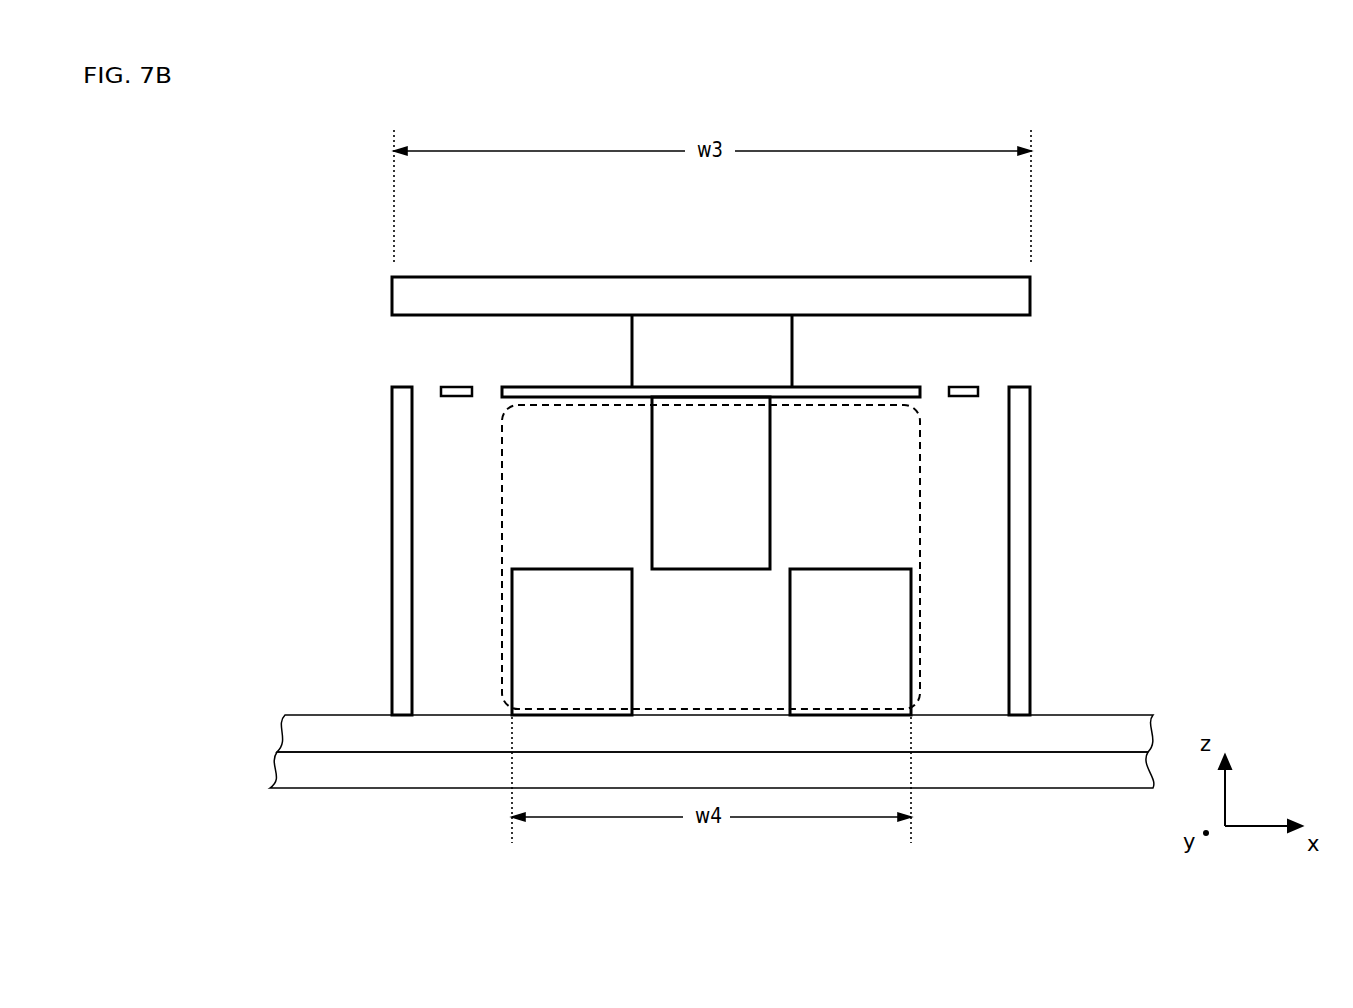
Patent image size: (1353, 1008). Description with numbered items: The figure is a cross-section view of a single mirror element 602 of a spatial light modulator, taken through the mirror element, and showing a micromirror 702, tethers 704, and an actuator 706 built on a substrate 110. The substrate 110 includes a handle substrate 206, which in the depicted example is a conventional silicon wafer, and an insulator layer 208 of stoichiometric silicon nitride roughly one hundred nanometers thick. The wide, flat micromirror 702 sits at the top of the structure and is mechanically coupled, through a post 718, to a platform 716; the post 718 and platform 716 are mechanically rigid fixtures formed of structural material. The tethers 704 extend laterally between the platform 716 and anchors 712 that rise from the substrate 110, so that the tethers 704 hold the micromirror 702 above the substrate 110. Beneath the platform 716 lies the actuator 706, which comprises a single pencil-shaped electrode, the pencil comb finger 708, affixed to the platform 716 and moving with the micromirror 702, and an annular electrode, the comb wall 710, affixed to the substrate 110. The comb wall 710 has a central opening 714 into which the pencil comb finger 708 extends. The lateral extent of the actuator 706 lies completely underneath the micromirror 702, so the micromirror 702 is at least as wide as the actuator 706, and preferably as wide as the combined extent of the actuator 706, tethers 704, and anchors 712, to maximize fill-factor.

The mirror element 602 is at (199, 237).
The micromirror 702 is at (392, 295).
The post 718 is at (672, 350).
The platform 716 is at (850, 390).
The tethers 704 is at (966, 388).
The anchors 712 is at (392, 532).
The actuator 706 is at (920, 560).
The pencil comb finger 708 is at (728, 507).
The comb wall 710 is at (602, 656).
The central opening 714 is at (734, 612).
The substrate 110 is at (644, 700).
The insulator layer 208 is at (482, 746).
The handle substrate 206 is at (502, 782).